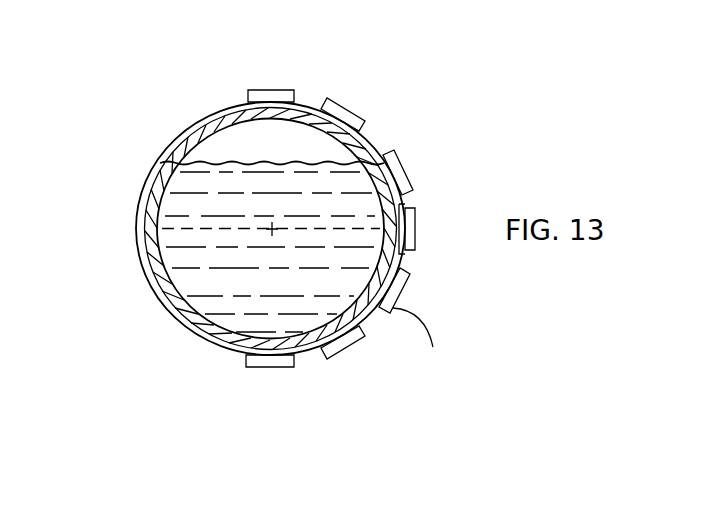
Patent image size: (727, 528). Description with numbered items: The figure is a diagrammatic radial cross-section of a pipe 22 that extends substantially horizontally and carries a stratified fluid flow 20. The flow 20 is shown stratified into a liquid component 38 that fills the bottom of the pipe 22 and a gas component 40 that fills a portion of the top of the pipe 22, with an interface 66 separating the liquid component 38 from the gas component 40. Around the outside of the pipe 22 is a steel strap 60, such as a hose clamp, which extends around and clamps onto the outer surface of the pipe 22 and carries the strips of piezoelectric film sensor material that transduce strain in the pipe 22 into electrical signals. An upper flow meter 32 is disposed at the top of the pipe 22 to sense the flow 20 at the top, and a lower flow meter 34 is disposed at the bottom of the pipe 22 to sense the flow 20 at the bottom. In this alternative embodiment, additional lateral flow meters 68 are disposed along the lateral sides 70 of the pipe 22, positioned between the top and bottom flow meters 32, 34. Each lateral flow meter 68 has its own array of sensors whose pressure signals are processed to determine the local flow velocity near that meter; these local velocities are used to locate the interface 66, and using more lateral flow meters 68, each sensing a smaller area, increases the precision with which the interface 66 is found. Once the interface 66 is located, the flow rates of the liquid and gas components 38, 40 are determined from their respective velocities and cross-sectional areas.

The stratified fluid flow 20 is at (198, 207).
The pipe 22 is at (153, 265).
The upper flow meter 32 is at (283, 88).
The lower flow meter 34 is at (270, 370).
The liquid component 38 is at (160, 289).
The gas component 40 is at (222, 145).
The steel strap 60 is at (185, 330).
The interface 66 is at (208, 160).
The lateral flow meters 68 is at (352, 104).
The lateral sides 70 is at (140, 230).